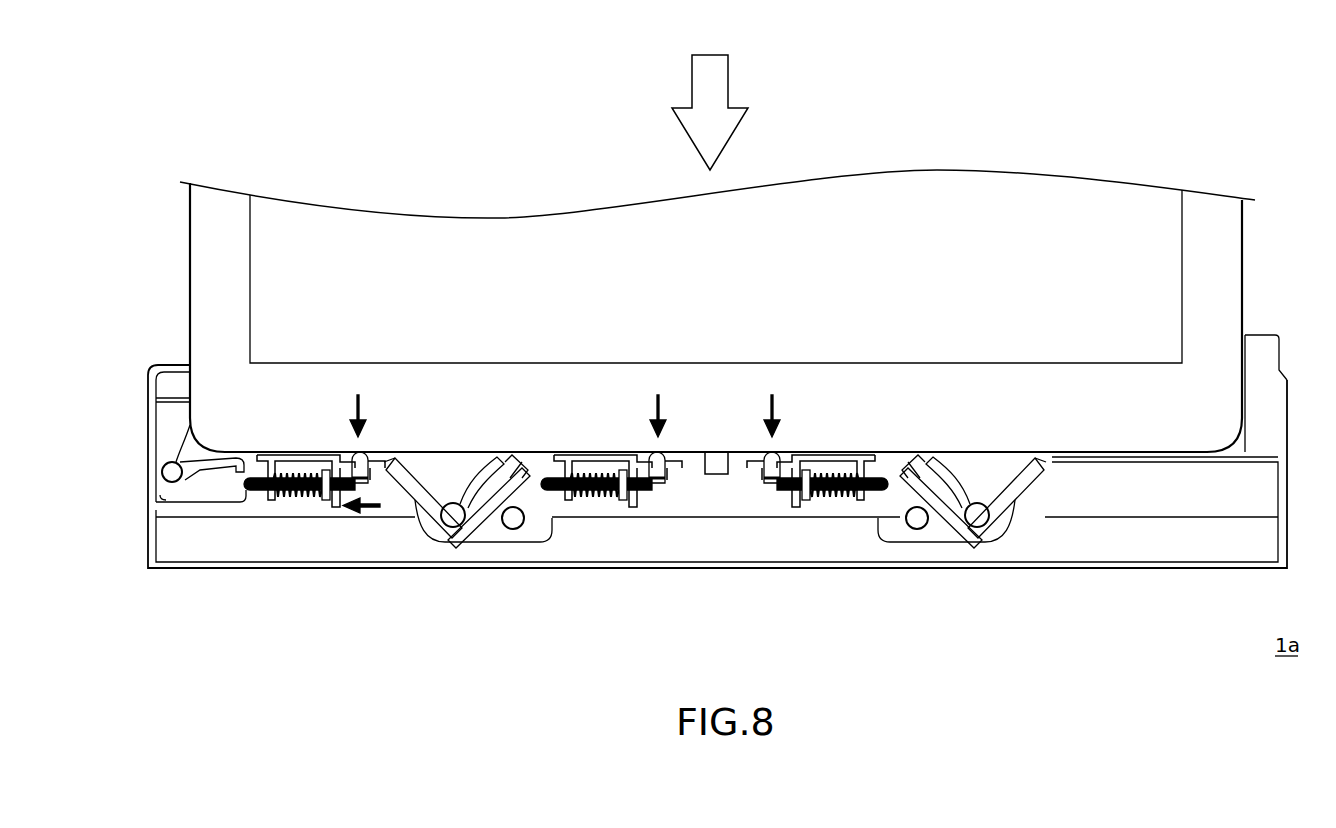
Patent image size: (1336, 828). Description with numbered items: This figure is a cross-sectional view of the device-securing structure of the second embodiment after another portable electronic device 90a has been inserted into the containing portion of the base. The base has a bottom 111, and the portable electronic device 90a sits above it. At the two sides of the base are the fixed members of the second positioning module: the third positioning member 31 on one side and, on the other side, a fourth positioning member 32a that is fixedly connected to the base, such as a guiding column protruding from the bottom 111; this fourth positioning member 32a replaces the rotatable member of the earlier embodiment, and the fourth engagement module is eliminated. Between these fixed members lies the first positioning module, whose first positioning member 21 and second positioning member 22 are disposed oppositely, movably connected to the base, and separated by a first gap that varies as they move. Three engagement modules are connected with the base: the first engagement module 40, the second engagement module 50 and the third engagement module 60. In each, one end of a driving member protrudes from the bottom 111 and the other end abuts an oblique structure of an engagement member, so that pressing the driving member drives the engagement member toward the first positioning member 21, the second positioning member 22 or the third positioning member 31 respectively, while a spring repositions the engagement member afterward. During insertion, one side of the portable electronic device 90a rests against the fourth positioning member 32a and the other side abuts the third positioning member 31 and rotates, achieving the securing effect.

The portable electronic device 90a is at (1225, 240).
The bottom 111 is at (1130, 460).
The fourth positioning member 32a is at (1257, 347).
The third positioning member 31 is at (160, 442).
The third engagement module 60 is at (292, 500).
The first engagement module 40 is at (590, 503).
The second engagement module 50 is at (846, 506).
The first positioning member 21 is at (476, 530).
The second positioning member 22 is at (962, 530).